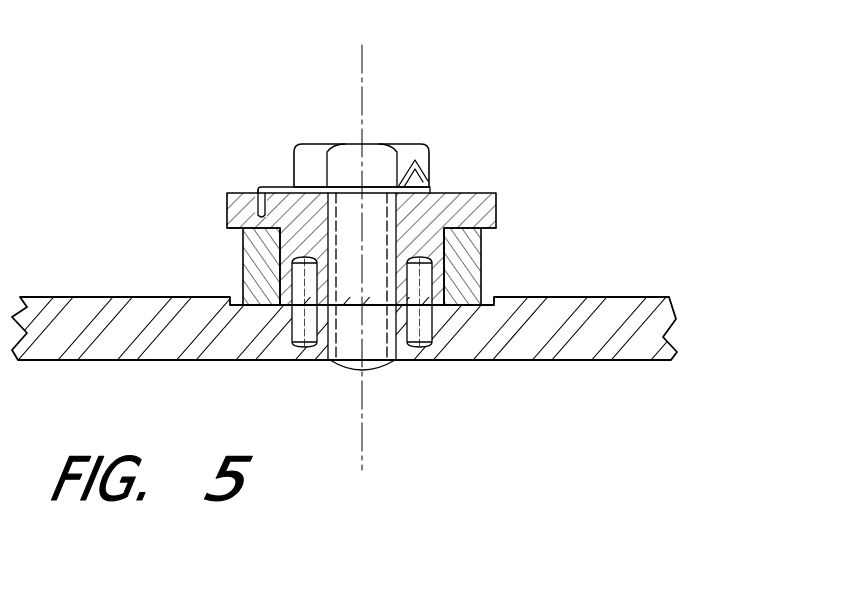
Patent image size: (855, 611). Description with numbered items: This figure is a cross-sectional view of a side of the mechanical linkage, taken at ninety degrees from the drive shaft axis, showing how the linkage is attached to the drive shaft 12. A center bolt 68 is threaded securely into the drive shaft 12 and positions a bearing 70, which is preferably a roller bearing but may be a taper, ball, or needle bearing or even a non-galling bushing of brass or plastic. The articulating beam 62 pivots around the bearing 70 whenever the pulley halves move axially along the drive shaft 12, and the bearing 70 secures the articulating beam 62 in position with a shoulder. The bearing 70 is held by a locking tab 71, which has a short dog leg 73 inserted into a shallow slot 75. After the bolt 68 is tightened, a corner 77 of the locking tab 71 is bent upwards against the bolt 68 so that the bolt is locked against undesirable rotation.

The drive shaft 12 is at (658, 297).
The articulating beam 62 is at (243, 250).
The center bolt 68 is at (377, 165).
The bearing 70 is at (496, 207).
The locking tab 71 is at (428, 168).
The short dog leg 73 is at (262, 188).
The shallow slot 75 is at (241, 229).
The corner of the locking tab 77 is at (445, 189).